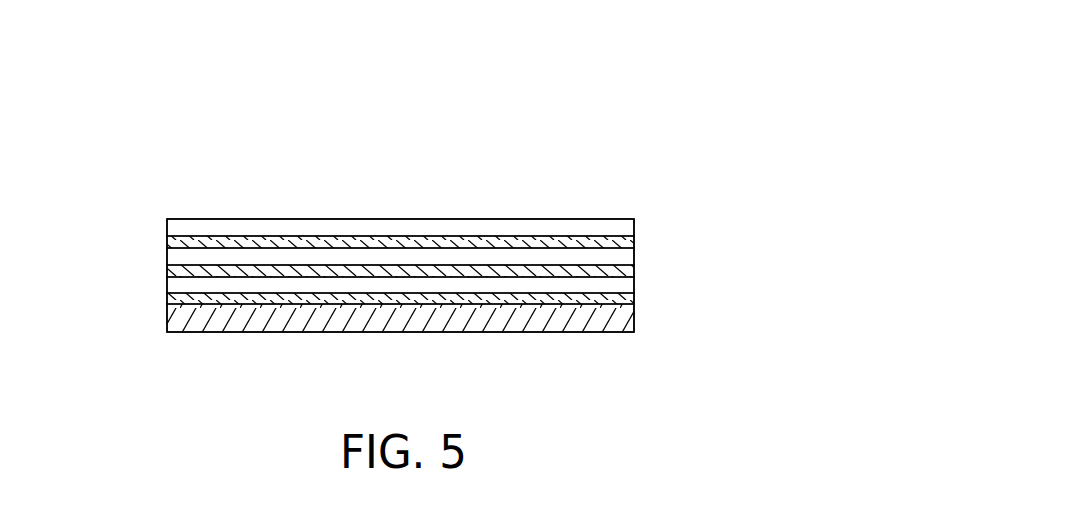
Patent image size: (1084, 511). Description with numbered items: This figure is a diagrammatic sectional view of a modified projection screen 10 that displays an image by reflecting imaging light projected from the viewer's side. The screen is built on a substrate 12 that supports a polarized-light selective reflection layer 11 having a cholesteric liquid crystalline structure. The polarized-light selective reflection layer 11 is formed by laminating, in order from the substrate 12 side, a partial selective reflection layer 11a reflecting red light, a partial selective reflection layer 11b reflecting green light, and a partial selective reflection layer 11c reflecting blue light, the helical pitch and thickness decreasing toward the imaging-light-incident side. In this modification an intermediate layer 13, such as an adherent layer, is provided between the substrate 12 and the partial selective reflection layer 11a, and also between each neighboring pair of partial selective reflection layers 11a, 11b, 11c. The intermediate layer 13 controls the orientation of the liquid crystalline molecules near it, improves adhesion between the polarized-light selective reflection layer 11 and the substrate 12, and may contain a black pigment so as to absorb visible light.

The projection screen 10 is at (632, 164).
The polarized-light selective reflection layer 11 is at (712, 218).
The partial selective reflection layer 11a is at (634, 290).
The partial selective reflection layer 11b is at (634, 259).
The partial selective reflection layer 11c is at (634, 232).
The substrate 12 is at (634, 322).
The intermediate layer 13 is at (167, 242).